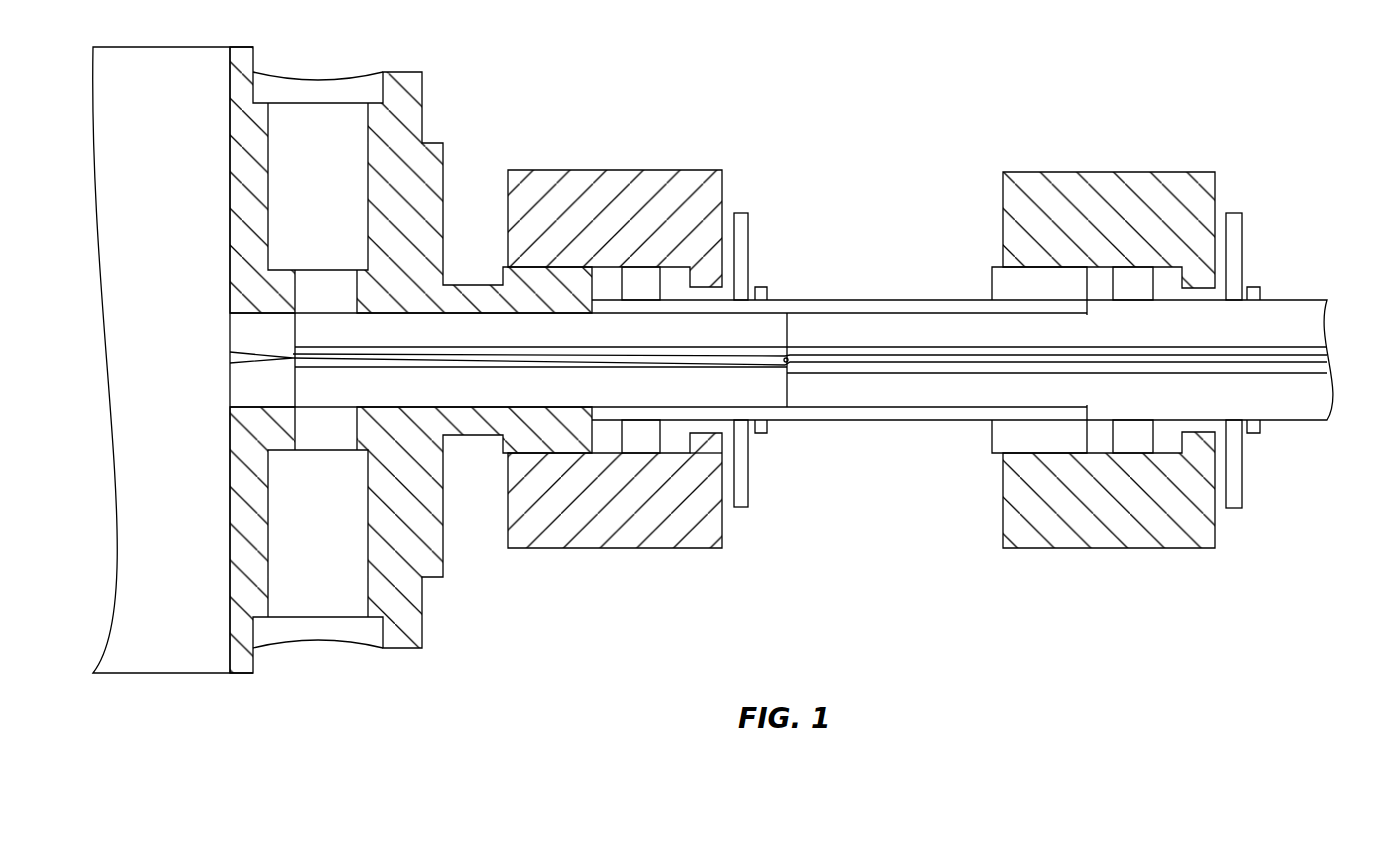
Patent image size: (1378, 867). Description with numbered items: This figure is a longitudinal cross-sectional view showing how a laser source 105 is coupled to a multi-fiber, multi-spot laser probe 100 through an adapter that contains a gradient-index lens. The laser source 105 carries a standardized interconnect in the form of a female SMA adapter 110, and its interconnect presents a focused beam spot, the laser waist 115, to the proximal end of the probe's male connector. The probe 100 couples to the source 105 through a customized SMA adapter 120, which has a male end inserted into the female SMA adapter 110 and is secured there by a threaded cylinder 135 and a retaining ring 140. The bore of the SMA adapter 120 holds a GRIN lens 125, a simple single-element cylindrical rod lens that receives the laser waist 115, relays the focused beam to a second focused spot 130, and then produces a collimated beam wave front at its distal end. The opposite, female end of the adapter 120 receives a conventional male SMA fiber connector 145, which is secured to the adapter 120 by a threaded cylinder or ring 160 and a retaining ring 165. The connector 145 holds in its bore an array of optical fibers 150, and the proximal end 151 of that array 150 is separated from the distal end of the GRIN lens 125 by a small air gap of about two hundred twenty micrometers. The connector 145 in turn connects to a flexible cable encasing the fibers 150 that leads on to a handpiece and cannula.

The laser probe 100 is at (1268, 172).
The laser source 105 is at (178, 270).
The female SMA adapter 110 is at (405, 115).
The laser waist 115 is at (293, 362).
The customized SMA adapter 120 is at (671, 334).
The gradient index (GRIN) lens 125 is at (468, 365).
The second focused spot 130 is at (645, 363).
The threaded cylinder 135 is at (598, 192).
The retaining ring 140 is at (741, 220).
The male SMA 905 fiber connector 145 is at (1278, 320).
The array of optical fibers 150 is at (932, 353).
The proximal end of the fiber array 151 is at (786, 358).
The threaded cylinder or ring 160 is at (1130, 532).
The retaining ring 165 is at (1238, 492).